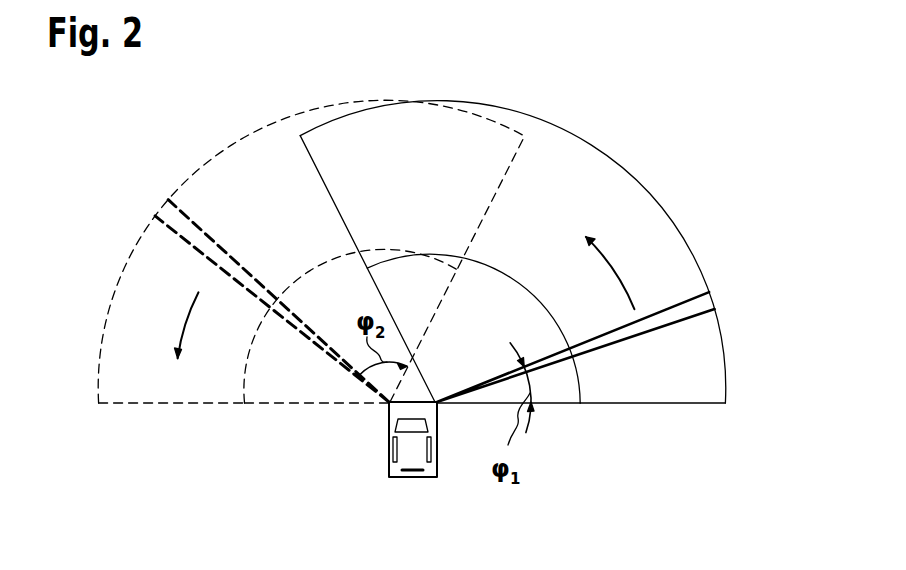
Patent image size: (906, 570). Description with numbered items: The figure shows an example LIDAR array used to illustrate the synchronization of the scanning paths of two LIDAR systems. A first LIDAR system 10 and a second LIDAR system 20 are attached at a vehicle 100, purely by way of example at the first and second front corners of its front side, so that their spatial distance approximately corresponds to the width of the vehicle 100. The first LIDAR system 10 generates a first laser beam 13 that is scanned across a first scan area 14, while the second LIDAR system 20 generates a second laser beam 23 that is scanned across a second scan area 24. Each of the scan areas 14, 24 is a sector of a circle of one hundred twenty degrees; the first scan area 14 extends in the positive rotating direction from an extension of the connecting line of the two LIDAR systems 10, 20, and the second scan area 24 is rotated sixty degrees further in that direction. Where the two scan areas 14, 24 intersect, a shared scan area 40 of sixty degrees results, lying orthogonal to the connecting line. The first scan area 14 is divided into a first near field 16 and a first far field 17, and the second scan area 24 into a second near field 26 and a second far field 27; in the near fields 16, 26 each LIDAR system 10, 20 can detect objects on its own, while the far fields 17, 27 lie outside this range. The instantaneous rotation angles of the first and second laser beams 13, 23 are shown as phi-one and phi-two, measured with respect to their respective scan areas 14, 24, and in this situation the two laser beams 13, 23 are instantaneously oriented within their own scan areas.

The vehicle 100 is at (415, 478).
The first LIDAR system 10 is at (440, 405).
The second LIDAR system 20 is at (387, 405).
The first laser beam 13 is at (704, 301).
The second laser beam 23 is at (168, 200).
The first scan area 14 is at (657, 200).
The second scan area 24 is at (220, 152).
The first near field 16 is at (552, 390).
The second near field 26 is at (293, 387).
The first far field 17 is at (655, 388).
The second far field 27 is at (176, 390).
The shared scan area 40 is at (397, 192).